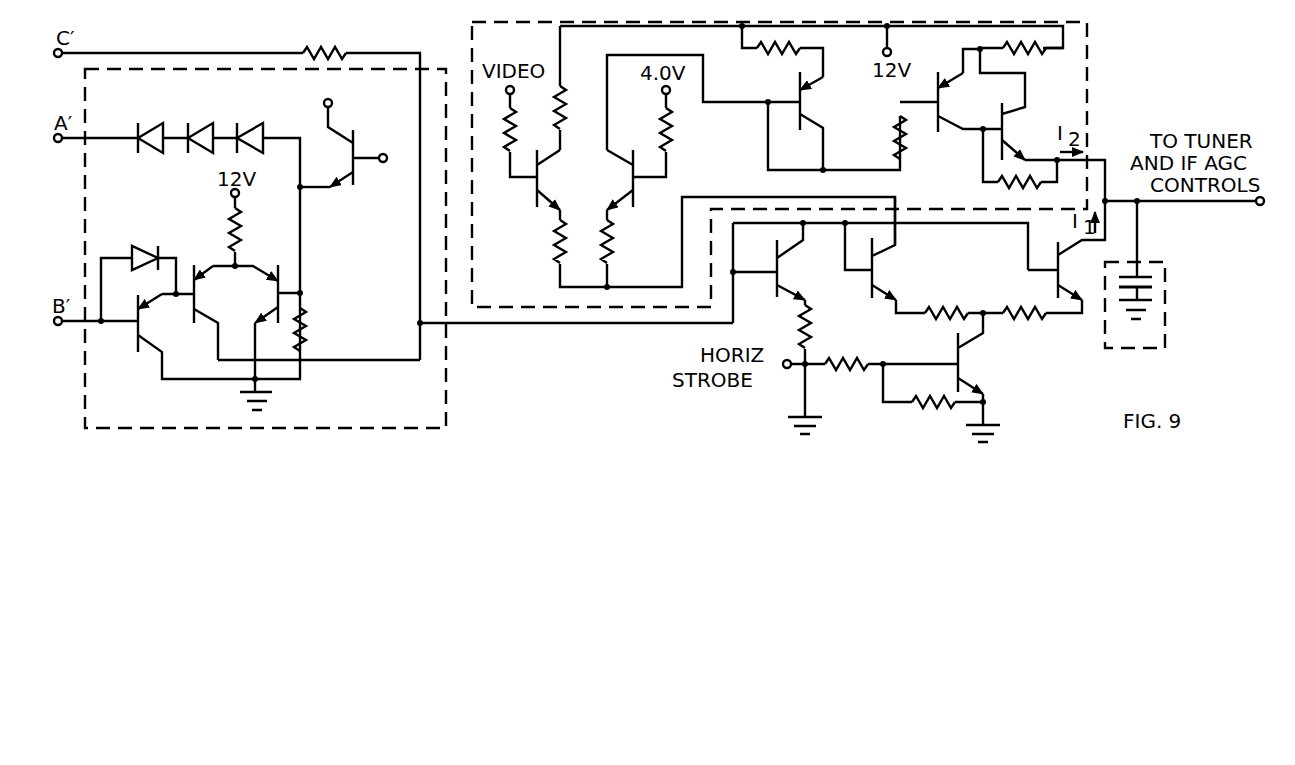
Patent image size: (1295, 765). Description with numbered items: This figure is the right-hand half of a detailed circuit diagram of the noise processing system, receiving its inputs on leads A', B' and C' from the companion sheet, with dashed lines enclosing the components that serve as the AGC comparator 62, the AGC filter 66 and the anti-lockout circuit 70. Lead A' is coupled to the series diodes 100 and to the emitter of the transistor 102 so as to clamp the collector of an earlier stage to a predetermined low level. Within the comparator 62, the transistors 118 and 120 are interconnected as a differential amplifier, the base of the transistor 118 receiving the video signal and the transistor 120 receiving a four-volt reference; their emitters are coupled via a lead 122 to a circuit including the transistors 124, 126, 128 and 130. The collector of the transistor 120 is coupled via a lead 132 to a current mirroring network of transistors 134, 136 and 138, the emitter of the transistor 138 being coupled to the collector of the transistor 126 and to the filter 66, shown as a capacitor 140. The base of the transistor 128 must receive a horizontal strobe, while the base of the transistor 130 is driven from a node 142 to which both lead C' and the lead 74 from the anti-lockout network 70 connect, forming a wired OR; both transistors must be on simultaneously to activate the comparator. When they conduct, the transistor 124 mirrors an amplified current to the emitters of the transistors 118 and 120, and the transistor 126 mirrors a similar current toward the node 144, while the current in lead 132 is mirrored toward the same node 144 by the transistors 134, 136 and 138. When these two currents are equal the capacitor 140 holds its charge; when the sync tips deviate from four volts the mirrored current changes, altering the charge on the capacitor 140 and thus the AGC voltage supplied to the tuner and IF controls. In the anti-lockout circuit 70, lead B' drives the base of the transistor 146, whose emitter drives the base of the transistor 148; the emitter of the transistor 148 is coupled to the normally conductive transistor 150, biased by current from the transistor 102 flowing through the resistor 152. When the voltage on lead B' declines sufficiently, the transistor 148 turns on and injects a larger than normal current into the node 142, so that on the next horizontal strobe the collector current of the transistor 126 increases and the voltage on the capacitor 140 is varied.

The AGC comparator 62 is at (530, 22).
The AGC filter 66 is at (1165, 299).
The anti-lockout circuit 70 is at (387, 428).
The lead 74 is at (408, 362).
The diodes 100 is at (273, 123).
The transistor 102 is at (351, 162).
The transistor 118 is at (548, 178).
The transistor 120 is at (637, 197).
The lead 122 is at (899, 233).
The transistor 124 is at (873, 268).
The transistor 126 is at (1056, 286).
The transistor 128 is at (961, 365).
The transistor 130 is at (778, 269).
The lead 132 is at (631, 55).
The transistor 134 is at (801, 102).
The transistor 136 is at (940, 100).
The transistor 138 is at (1006, 127).
The capacitor 140 is at (1152, 272).
The node 142 is at (418, 321).
The node 144 is at (1139, 205).
The transistor 146 is at (140, 322).
The transistor 148 is at (197, 296).
The transistor 150 is at (281, 279).
The resistor 152 is at (306, 329).